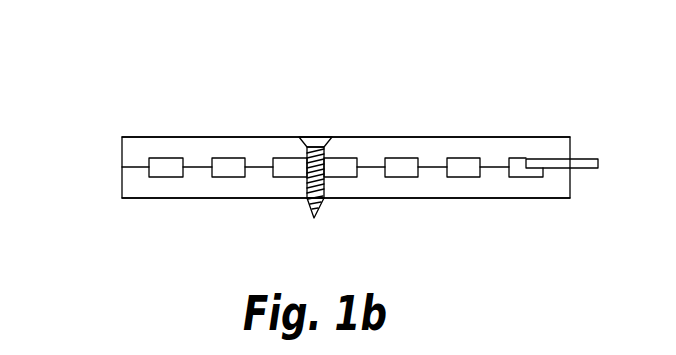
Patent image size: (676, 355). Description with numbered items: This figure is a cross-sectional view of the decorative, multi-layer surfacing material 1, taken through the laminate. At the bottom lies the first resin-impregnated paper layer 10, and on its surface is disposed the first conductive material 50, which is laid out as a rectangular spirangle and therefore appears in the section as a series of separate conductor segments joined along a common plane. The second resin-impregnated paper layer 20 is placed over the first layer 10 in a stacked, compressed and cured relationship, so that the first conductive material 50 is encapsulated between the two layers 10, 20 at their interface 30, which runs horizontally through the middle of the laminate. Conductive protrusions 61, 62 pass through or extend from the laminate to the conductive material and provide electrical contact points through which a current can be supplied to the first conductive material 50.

The decorative, multi-layer surfacing material 1 is at (479, 116).
The first resin-impregnated paper layer 10 is at (122, 187).
The second resin-impregnated paper layer 20 is at (122, 150).
The interface 30 is at (125, 167).
The first conductive material 50 is at (285, 168).
The conductive protrusion 61 is at (316, 141).
The conductive protrusion 62 is at (556, 168).